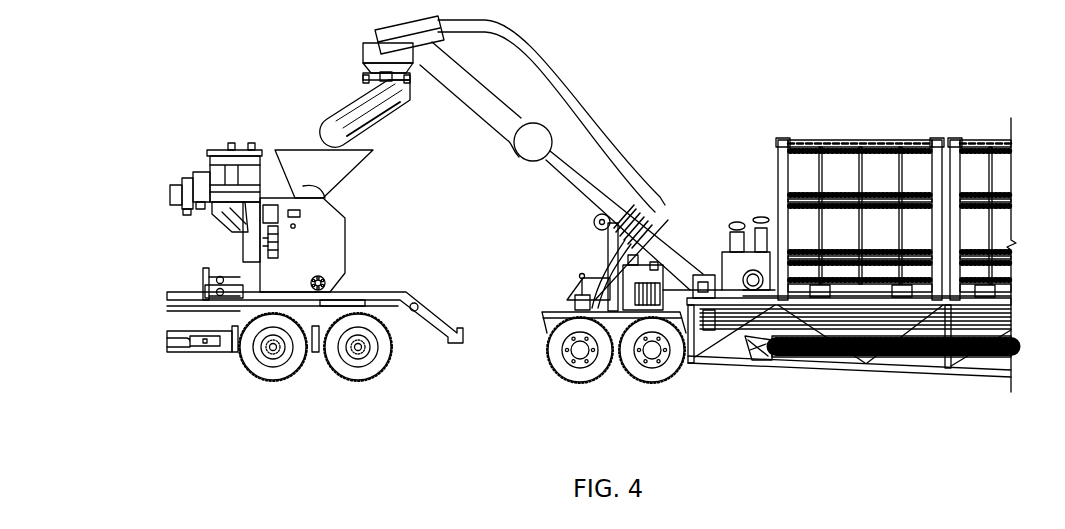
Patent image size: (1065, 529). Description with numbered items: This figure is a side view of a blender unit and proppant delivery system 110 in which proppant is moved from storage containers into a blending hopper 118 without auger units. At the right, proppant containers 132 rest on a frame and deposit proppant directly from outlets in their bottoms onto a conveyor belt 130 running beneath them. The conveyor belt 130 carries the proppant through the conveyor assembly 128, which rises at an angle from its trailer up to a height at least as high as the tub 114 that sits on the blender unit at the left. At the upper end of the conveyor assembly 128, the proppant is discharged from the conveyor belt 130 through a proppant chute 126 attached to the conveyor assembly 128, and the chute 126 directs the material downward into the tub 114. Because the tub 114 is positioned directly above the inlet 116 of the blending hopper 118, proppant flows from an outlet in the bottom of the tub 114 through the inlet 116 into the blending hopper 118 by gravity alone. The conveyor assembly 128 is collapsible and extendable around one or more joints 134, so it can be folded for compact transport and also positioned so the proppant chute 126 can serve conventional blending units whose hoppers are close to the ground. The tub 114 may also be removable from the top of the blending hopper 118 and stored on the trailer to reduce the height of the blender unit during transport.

The mobile bulk material handling system 110 is at (242, 113).
The tub 114 is at (360, 158).
The inlet 116 is at (327, 197).
The blending hopper 118 is at (333, 249).
The proppant chute 126 is at (352, 108).
The conveyor assembly 128 is at (601, 145).
The conveyor belt 130 is at (862, 363).
The proppant containers 132 is at (838, 139).
The joints 134 is at (541, 122).